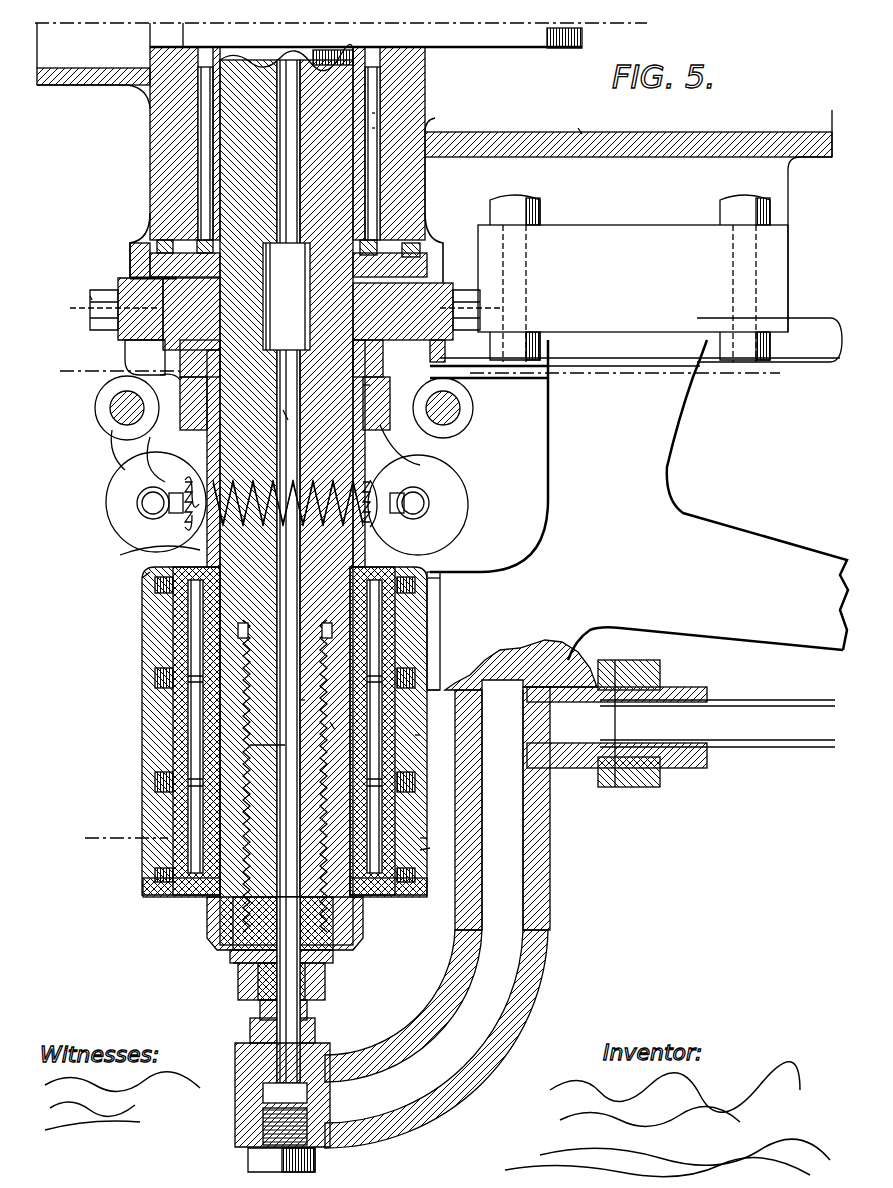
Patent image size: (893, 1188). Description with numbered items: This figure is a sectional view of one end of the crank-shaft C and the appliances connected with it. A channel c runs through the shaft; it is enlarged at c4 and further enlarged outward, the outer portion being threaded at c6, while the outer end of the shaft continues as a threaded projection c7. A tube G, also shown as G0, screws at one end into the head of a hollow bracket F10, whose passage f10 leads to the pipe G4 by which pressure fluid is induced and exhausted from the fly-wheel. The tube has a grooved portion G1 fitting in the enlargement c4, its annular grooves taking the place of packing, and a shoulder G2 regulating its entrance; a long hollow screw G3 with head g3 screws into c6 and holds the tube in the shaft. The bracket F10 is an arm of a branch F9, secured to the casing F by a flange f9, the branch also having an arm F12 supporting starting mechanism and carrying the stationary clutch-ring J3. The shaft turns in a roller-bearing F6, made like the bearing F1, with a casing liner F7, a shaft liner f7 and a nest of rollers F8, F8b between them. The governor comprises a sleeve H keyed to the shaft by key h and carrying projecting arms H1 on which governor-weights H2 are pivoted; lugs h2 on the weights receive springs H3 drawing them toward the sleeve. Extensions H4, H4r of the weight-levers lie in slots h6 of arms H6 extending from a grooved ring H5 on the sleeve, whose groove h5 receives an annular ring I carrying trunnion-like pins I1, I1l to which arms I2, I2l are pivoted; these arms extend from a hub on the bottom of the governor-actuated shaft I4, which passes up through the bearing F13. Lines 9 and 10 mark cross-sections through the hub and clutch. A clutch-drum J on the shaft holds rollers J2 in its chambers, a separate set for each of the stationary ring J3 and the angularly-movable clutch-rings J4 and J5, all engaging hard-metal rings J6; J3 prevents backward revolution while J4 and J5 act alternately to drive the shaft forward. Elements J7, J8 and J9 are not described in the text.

The casing F is at (73, 85).
The bearing F1 is at (571, 121).
The bearing F6 is at (430, 183).
The liner F7 is at (400, 92).
The liner f7 is at (378, 113).
The nest of rollers F8 is at (207, 167).
The nest of rollers F8b is at (378, 128).
The shaft C is at (286, 494).
The channel c is at (288, 571).
The enlargement of channel c4 is at (322, 340).
The groove h5 is at (180, 268).
The annular ring I is at (130, 280).
The trunnion-like pin I1 is at (448, 283).
The trunnion-like pin I1l is at (90, 298).
The arm I2 is at (440, 345).
The arm I2l is at (95, 330).
The governor-actuated shaft I4 is at (641, 342).
The section line 9 is at (62, 373).
The flange f9 is at (633, 278).
The shaft-bearing F13 is at (485, 380).
The arm F12 is at (757, 495).
The branch F9 is at (705, 623).
The grooved ring H5 is at (128, 350).
The slot h6 is at (165, 378).
The extension of weight-lever H4 is at (95, 408).
The arm H6 is at (112, 436).
The projecting arm H1 is at (287, 415).
The governor-weight H2 is at (287, 503).
The lug h2 is at (286, 517).
The spring H3 is at (301, 497).
The sleeve H is at (425, 545).
The extension of weight-lever H4r is at (376, 394).
The key h is at (150, 560).
The clutch-drum J is at (440, 600).
The roller J2 is at (190, 812).
The stationary clutch-ring J3 is at (432, 612).
The hard-metal ring J6 is at (432, 655).
The angularly-movable clutch-ring J4 is at (420, 735).
The angularly-movable clutch-ring J5 is at (427, 835).
The section line 10 is at (253, 843).
The flange J7 is at (148, 572).
The shoulder G2 is at (315, 605).
The grooved portion of tube G1 is at (292, 706).
The long hollow screw G3 is at (274, 757).
The threaded portion c6 is at (333, 729).
The tube G0 is at (288, 423).
The nut end plate J8 is at (285, 901).
The lock nut J9 is at (363, 922).
The threaded projection c7 is at (345, 958).
The head of hollow screw g3 is at (238, 978).
The tube G is at (300, 1003).
The hollow bracket F10 is at (530, 960).
The passage f10 is at (502, 821).
The pipe G4 is at (735, 722).